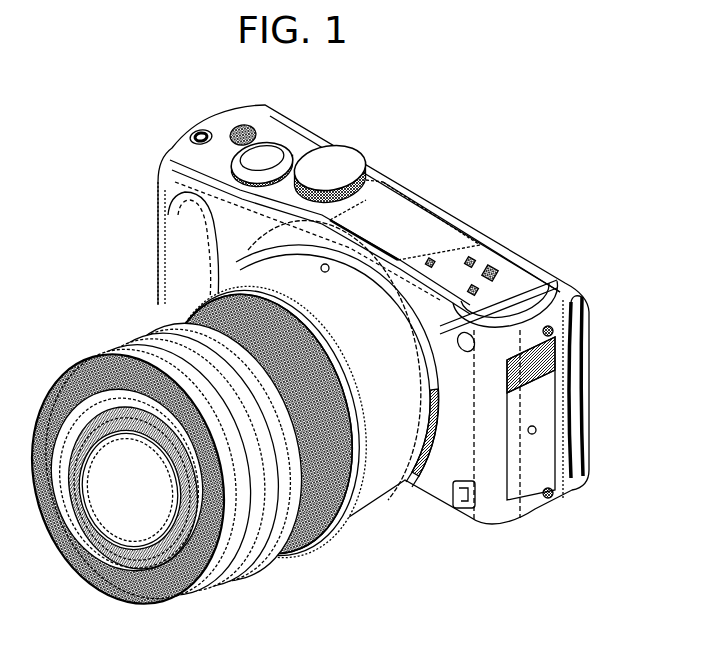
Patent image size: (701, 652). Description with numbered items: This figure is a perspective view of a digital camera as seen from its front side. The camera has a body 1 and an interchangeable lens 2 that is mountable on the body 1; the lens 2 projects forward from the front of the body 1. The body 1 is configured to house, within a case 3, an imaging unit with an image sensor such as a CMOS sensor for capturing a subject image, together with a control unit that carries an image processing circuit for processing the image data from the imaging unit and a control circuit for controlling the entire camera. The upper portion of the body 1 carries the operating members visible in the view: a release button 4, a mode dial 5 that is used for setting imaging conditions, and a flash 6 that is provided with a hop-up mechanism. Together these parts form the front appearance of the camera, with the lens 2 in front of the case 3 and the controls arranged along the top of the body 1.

The body 1 is at (296, 346).
The interchangeable lens 2 is at (118, 382).
The case 3 is at (487, 487).
The release button 4 is at (263, 157).
The mode dial 5 is at (332, 166).
The flash 6 is at (400, 217).